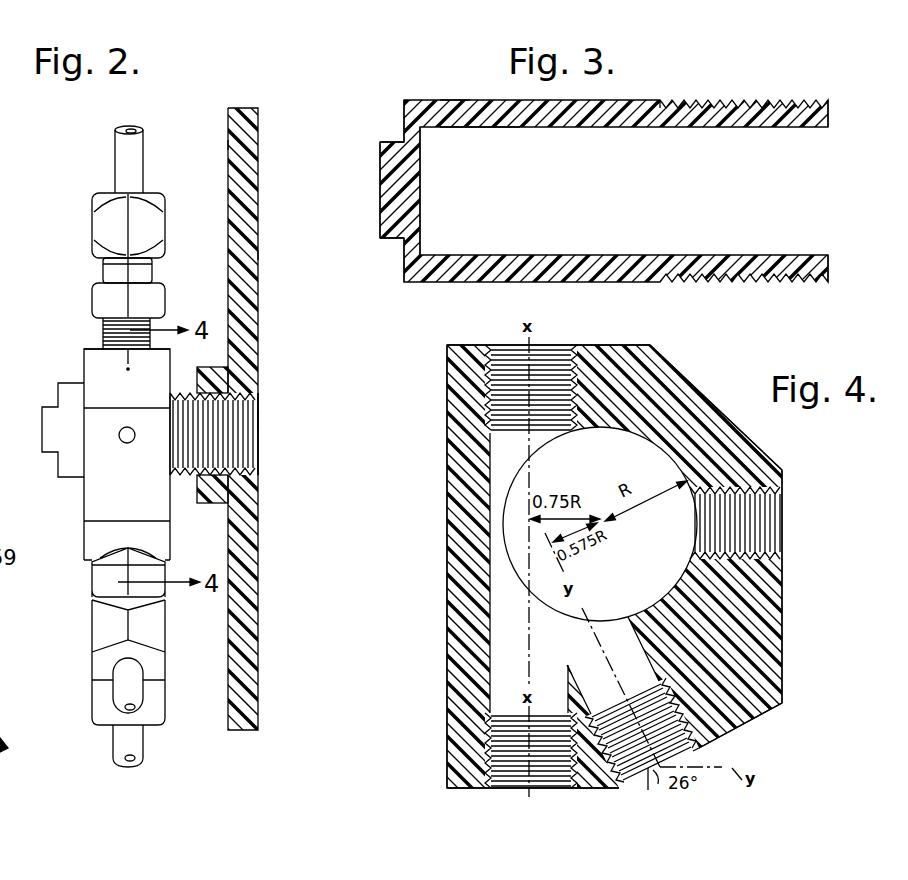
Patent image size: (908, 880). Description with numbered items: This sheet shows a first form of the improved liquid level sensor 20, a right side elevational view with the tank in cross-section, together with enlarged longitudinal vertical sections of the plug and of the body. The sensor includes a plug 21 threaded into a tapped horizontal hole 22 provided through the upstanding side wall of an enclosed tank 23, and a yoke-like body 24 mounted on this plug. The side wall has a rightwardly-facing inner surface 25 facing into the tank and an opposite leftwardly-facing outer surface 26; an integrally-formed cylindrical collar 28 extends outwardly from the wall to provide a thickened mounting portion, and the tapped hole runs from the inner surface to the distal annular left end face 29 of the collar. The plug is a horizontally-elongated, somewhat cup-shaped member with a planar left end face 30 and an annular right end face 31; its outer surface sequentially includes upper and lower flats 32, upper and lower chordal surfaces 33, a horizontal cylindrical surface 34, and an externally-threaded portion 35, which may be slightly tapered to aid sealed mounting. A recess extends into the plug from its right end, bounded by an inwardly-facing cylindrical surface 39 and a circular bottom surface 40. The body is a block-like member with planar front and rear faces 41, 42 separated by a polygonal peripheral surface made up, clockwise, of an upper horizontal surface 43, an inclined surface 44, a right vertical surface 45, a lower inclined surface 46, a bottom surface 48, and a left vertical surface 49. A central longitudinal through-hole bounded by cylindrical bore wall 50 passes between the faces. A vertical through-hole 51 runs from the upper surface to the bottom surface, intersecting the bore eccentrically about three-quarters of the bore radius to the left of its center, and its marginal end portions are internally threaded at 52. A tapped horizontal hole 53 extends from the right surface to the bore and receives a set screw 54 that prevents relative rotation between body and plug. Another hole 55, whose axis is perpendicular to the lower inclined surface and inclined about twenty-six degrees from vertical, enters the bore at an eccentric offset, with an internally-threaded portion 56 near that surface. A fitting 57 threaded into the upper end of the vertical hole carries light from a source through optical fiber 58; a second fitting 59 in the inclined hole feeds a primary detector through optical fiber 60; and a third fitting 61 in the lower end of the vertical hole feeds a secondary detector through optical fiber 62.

In FIG. 2, the liquid level sensor 20 is at (76, 333).
In FIG. 2, the plug 21 is at (262, 405).
In FIG. 3, the plug 21 is at (715, 97).
In FIG. 2, the tapped horizontal hole 22 is at (239, 466).
In FIG. 2, the tank 23 is at (262, 150).
In FIG. 2, the body 24 is at (84, 500).
In FIG. 4, the body 24 is at (447, 497).
In FIG. 2, the inner surface 25 is at (260, 258).
In FIG. 2, the outer surface 26 is at (228, 145).
In FIG. 2, the collar 28 is at (212, 501).
In FIG. 2, the left end face 29 is at (196, 373).
In FIG. 2, the left end face 30 is at (42, 436).
In FIG. 3, the left end face 30 is at (380, 165).
In FIG. 2, the right end face 31 is at (262, 419).
In FIG. 3, the right end face 31 is at (829, 155).
In FIG. 3, the flats 32 is at (404, 140).
In FIG. 3, the chordal surfaces 33 is at (404, 112).
In FIG. 3, the cylindrical surface 34 is at (456, 100).
In FIG. 3, the externally-threaded portion 35 is at (764, 105).
In FIG. 3, the cylindrical surface 39 is at (478, 130).
In FIG. 3, the bottom surface 40 is at (420, 209).
In FIG. 2, the front face 41 is at (84, 355).
In FIG. 2, the rear face 42 is at (170, 546).
In FIG. 4, the upper surface 43 is at (596, 344).
In FIG. 4, the inclined planar surface 44 is at (731, 338).
In FIG. 4, the right vertical surface 45 is at (782, 618).
In FIG. 4, the inclined planar surface 46 is at (748, 722).
In FIG. 4, the bottom surface 48 is at (447, 789).
In FIG. 4, the left vertical surface 49 is at (447, 548).
In FIG. 4, the through-bore wall 50 is at (658, 445).
In FIG. 4, the vertical through-hole 51 is at (490, 627).
In FIG. 4, the internally-threaded portions 52 is at (496, 345).
In FIG. 4, the tapped horizontal hole 53 is at (783, 519).
In FIG. 2, the set screw 54 is at (125, 444).
In FIG. 4, the inclined hole 55 is at (623, 639).
In FIG. 4, the internally-threaded portion 56 is at (700, 752).
In FIG. 2, the fitting 57 is at (94, 193).
In FIG. 2, the optical fiber 58 is at (114, 145).
In FIG. 2, the second fitting 59 is at (167, 657).
In FIG. 2, the optical fiber 60 is at (133, 709).
In FIG. 2, the third fitting 61 is at (88, 696).
In FIG. 2, the optical fiber 62 is at (113, 747).